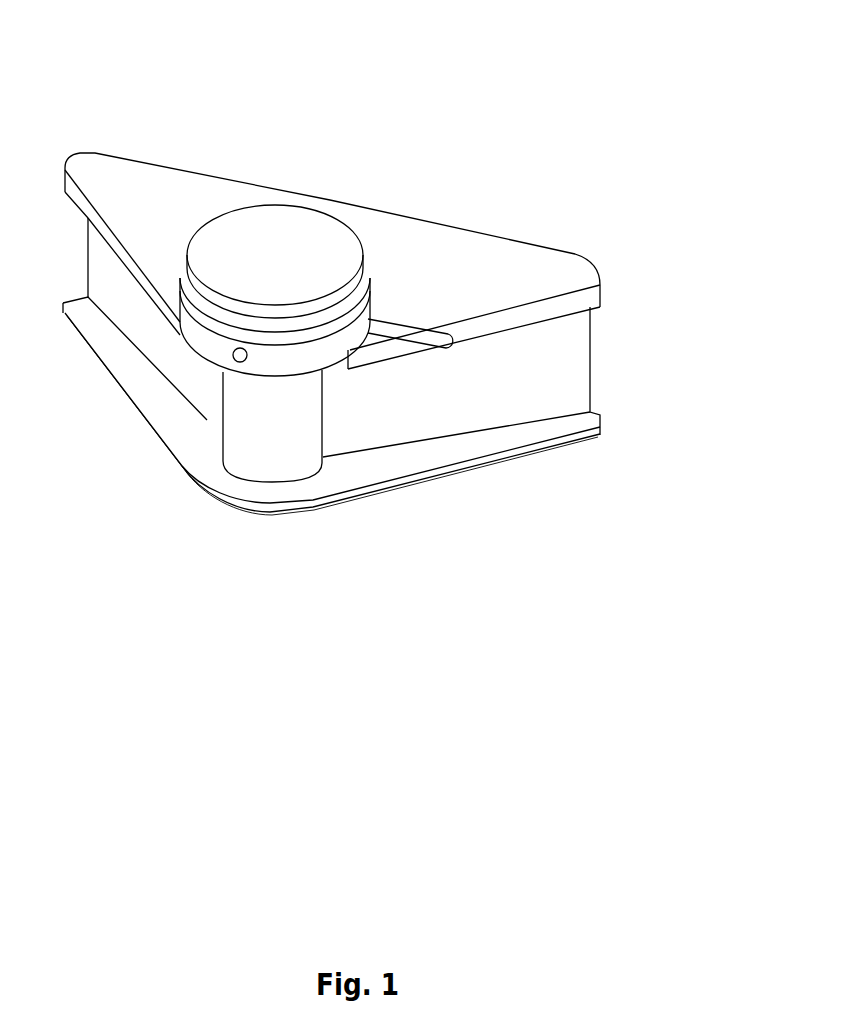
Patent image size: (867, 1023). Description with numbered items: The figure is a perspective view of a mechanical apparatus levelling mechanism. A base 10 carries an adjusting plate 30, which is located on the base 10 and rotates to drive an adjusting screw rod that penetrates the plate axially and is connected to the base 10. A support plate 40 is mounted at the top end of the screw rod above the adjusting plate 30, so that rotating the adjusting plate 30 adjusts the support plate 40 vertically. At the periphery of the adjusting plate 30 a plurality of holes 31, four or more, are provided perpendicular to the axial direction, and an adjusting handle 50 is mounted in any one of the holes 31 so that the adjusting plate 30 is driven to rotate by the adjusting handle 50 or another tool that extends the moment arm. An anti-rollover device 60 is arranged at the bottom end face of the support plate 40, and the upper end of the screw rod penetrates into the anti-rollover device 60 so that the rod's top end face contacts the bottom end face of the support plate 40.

The base 10 is at (514, 278).
The adjusting plate 30 is at (323, 348).
The holes 31 is at (237, 362).
The support plate 40 is at (286, 242).
The adjusting handle 50 is at (403, 325).
The anti-rollover device 60 is at (215, 307).